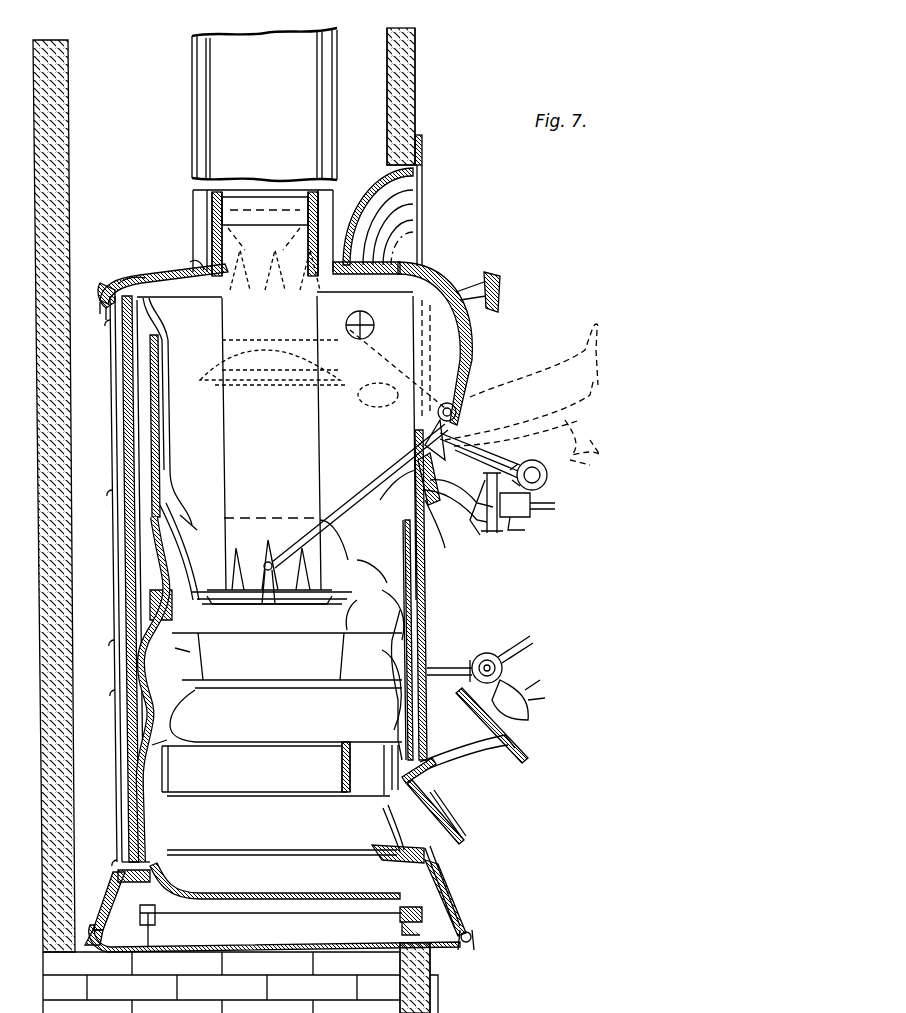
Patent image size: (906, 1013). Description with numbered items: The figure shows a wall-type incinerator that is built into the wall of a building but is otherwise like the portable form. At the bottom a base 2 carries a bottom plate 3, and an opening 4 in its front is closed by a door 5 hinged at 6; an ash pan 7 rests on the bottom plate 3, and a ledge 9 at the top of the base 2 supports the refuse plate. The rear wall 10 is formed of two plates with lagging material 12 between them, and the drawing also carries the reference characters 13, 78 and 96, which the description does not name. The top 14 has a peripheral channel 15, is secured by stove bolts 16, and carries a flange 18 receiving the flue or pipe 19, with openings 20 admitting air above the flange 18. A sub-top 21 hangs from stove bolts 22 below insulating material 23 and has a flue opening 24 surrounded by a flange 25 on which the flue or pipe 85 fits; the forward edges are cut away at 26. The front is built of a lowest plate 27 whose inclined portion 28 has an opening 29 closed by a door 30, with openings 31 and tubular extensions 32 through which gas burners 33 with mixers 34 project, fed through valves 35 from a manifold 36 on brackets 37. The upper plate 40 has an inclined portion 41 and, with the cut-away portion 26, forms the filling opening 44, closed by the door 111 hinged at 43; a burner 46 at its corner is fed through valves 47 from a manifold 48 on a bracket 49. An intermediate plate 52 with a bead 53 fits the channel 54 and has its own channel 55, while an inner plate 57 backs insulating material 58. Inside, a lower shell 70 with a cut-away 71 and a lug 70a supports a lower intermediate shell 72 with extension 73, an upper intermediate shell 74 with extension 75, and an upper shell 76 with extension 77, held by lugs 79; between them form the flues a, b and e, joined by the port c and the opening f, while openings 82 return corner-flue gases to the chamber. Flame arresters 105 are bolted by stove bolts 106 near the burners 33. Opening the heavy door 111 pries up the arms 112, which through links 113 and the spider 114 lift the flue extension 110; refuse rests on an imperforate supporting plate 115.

The base 2 is at (110, 875).
The bottom plate 3 is at (162, 945).
The opening 4 is at (430, 892).
The door 5 is at (452, 890).
The hinge 6 is at (472, 944).
The ash pan 7 is at (274, 929).
The ledge 9 is at (152, 452).
The rear wall 10 is at (120, 692).
The lagging material 12 is at (110, 388).
The casing lining 13 is at (122, 448).
The top 14 is at (163, 288).
The channel 15 is at (108, 312).
The stove bolts 16 is at (110, 292).
The flange 18 is at (206, 262).
The flue or pipe 19 is at (338, 140).
The openings 20 is at (203, 230).
The sub-top 21 is at (172, 305).
The stove bolts 22 is at (196, 266).
The insulating or lagging material 23 is at (132, 285).
The flue opening 24 is at (264, 241).
The flange 25 is at (265, 225).
The cut-away portion 26 is at (398, 290).
The lowest front plate 27 is at (455, 700).
The inclined portion 28 is at (465, 838).
The opening 29 is at (405, 798).
The door 30 is at (465, 825).
The openings 31 is at (436, 792).
The tubular extensions 32 is at (382, 768).
The gas burners 33 is at (448, 765).
The mixers 34 is at (505, 735).
The valves 35 is at (512, 705).
The manifold 36 is at (508, 660).
The brackets 37 is at (455, 655).
The plate 40 is at (505, 480).
The inclined portion 41 is at (386, 491).
The hinge 43 is at (438, 430).
The filling opening 44 is at (397, 369).
The burner 46 is at (483, 535).
The valves 47 is at (520, 522).
The manifold 48 is at (548, 482).
The bracket 49 is at (494, 466).
The intermediate plate 52 is at (426, 576).
The bead 53 is at (439, 524).
The channel 54 is at (424, 500).
The channel 55 is at (426, 660).
The plate 57 is at (426, 632).
The insulating material 58 is at (426, 606).
The lower shell 70 is at (138, 815).
The lug 70a is at (172, 716).
The cut-away 71 is at (387, 797).
The lower intermediate shell 72 is at (298, 715).
The extension 73 is at (254, 769).
The upper intermediate shell 74 is at (251, 608).
The extension 75 is at (287, 656).
The upper shell 76 is at (186, 512).
The extension 77 is at (334, 540).
The inner lining 78 is at (158, 415).
The lugs 79 is at (148, 637).
The openings 82 is at (346, 325).
The flue or pipe 85 is at (334, 78).
The burner 96 is at (271, 553).
The flame arrester 105 is at (365, 847).
The stove bolt 106 is at (370, 852).
The flue extension 110 is at (271, 443).
The door 111 is at (458, 345).
The arms 112 is at (368, 490).
The links 113 is at (282, 604).
The spider 114 is at (255, 604).
The imperforate supporting plate 115 is at (270, 864).
The passageway or flue a is at (357, 612).
The passageway or flue b is at (182, 660).
The port or opening c is at (163, 734).
The passageway or flue e is at (373, 568).
The opening f is at (191, 513).